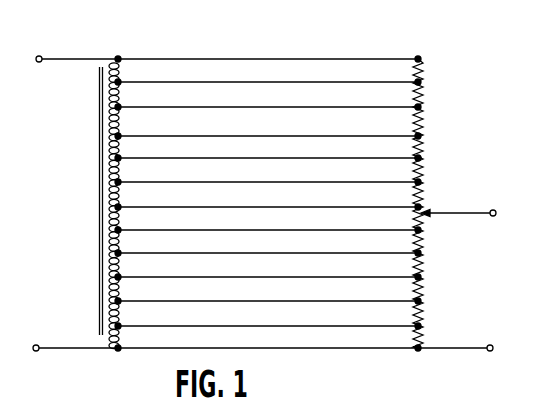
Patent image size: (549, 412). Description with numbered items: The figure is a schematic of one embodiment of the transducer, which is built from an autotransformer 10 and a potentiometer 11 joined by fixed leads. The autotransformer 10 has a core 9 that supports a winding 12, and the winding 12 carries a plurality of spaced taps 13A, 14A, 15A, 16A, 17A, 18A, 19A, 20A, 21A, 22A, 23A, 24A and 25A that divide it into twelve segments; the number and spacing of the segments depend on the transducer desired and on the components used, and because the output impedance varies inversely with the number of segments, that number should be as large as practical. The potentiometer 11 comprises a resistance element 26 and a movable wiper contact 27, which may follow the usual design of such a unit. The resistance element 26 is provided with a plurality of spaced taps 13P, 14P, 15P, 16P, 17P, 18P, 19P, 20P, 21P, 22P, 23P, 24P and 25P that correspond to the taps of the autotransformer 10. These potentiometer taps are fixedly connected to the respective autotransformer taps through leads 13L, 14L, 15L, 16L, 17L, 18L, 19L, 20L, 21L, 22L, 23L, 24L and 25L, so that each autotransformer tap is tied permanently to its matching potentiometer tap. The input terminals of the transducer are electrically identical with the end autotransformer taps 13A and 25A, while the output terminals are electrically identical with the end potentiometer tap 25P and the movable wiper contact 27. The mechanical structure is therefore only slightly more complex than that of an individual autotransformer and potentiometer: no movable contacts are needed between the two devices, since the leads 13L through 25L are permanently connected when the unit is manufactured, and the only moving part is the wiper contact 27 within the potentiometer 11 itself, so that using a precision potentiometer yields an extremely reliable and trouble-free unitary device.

The core 9 is at (99, 201).
The autotransformer 10 is at (59, 55).
The potentiometer 11 is at (428, 113).
The winding 12 is at (100, 106).
The resistance element 26 is at (451, 161).
The movable wiper contact 27 is at (473, 215).
The tap 13A is at (120, 58).
The tap 14A is at (120, 81).
The tap 15A is at (120, 106).
The tap 16A is at (120, 135).
The tap 17A is at (120, 157).
The tap 18A is at (120, 181).
The tap 19A is at (120, 206).
The tap 20A is at (120, 229).
The tap 21A is at (120, 252).
The tap 22A is at (120, 276).
The tap 23A is at (120, 300).
The tap 24A is at (120, 325).
The tap 25A is at (120, 347).
The lead 13L is at (248, 58).
The lead 14L is at (248, 81).
The lead 15L is at (248, 106).
The lead 16L is at (248, 135).
The lead 17L is at (248, 157).
The lead 18L is at (248, 181).
The lead 19L is at (248, 206).
The lead 20L is at (248, 229).
The lead 21L is at (248, 252).
The lead 22L is at (248, 276).
The lead 23L is at (248, 300).
The lead 24L is at (248, 325).
The lead 25L is at (248, 347).
The tap 13P is at (420, 58).
The tap 14P is at (420, 81).
The tap 15P is at (420, 106).
The tap 16P is at (420, 135).
The tap 17P is at (420, 157).
The tap 18P is at (420, 181).
The tap 19P is at (420, 206).
The tap 20P is at (420, 229).
The tap 21P is at (420, 252).
The tap 22P is at (420, 276).
The tap 23P is at (420, 300).
The tap 24P is at (420, 325).
The tap 25P is at (420, 347).